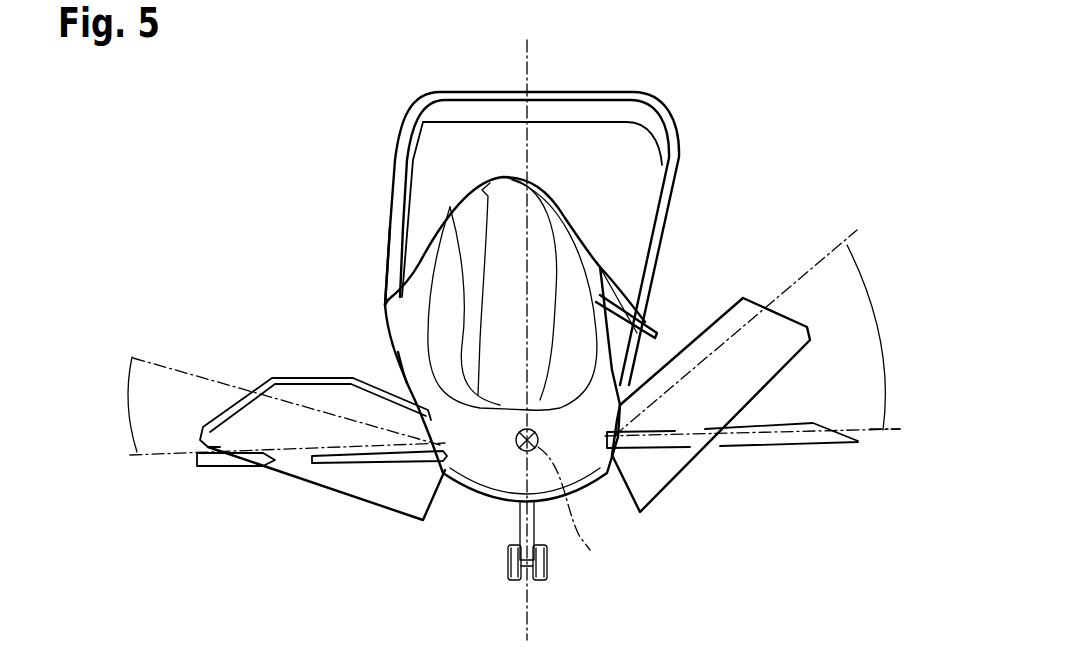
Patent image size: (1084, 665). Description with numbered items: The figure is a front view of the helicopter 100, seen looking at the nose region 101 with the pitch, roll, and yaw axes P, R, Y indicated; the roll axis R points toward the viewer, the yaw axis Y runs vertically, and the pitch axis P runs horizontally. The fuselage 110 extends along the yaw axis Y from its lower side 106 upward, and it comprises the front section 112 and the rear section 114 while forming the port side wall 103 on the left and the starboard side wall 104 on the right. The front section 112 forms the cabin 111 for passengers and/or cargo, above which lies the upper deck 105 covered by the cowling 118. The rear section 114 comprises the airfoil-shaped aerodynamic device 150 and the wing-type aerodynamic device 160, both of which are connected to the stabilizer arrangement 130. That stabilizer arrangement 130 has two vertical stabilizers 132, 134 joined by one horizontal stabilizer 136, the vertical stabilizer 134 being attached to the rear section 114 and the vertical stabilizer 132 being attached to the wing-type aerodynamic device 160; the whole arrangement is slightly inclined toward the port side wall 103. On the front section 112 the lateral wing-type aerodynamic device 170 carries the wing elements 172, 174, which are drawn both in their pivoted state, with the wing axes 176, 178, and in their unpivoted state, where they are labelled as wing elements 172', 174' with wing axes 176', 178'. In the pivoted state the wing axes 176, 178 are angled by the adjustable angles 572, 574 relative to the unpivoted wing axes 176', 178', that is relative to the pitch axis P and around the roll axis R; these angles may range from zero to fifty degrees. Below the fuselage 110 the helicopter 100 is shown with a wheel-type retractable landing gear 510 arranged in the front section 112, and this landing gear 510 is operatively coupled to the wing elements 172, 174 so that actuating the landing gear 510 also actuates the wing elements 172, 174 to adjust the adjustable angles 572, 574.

The helicopter 100 is at (190, 147).
The nose region 101 is at (471, 503).
The port side wall 103 is at (634, 366).
The starboard side wall 104 is at (413, 387).
The upper deck 105 is at (562, 197).
The lower side 106 is at (506, 505).
The fuselage 110 is at (472, 450).
The cabin 111 is at (534, 320).
The front section 112 is at (603, 500).
The rear section 114 is at (378, 318).
The cowling 118 is at (482, 178).
The stabilizer arrangement 130 is at (693, 160).
The vertical stabilizer 132 is at (663, 203).
The vertical stabilizer 134 is at (395, 190).
The horizontal stabilizer 136 is at (605, 110).
The airfoil-shaped aerodynamic device 150 is at (395, 296).
The wing-type aerodynamic device 160 is at (620, 293).
The lateral wing-type aerodynamic device 170 is at (287, 492).
The wing element 172 is at (740, 405).
The wing element in unpivoted state 172' is at (732, 472).
The wing element 174 is at (315, 378).
The wing element in unpivoted state 174' is at (313, 499).
The wing axis 176 is at (735, 313).
The wing axis in unpivoted state 176' is at (901, 475).
The wing axis 178 is at (286, 369).
The wing axis in unpivoted state 178' is at (279, 495).
The retractable landing gear 510 is at (585, 558).
The adjustable angle 572 is at (873, 308).
The adjustable angle 574 is at (132, 395).
The pitch axis P is at (870, 427).
The roll axis R is at (557, 550).
The yaw axis Y is at (524, 45).